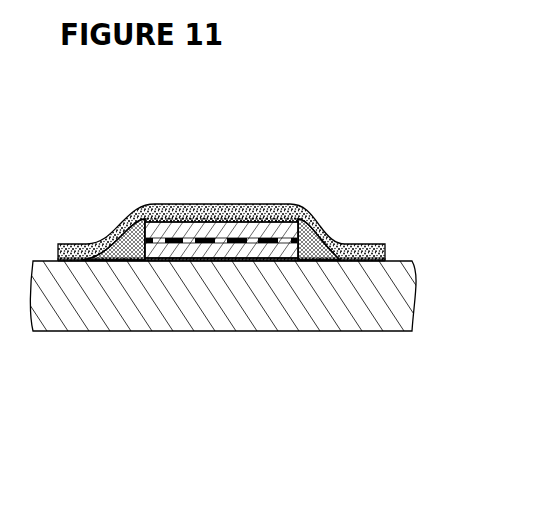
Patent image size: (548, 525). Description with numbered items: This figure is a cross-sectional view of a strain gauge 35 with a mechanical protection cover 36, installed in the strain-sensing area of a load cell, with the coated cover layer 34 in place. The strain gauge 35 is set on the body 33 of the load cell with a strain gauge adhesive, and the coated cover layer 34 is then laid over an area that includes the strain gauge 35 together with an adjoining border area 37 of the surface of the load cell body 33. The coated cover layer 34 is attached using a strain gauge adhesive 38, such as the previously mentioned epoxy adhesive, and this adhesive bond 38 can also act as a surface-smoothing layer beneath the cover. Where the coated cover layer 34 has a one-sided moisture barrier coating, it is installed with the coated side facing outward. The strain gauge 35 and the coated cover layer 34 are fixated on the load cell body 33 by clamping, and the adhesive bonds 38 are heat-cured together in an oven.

The body of a load cell 33 is at (217, 290).
The coated cover layer 34 is at (185, 210).
The strain gauge with mechanical protection cover 35 is at (223, 238).
The mechanical protection cover 36 is at (150, 221).
The adjoining border area 37 is at (117, 260).
The strain gauge adhesive 38 is at (315, 243).